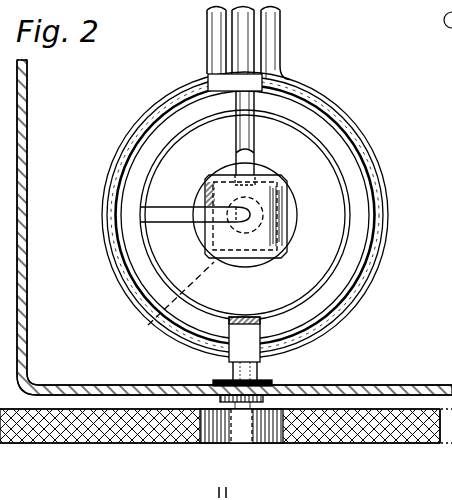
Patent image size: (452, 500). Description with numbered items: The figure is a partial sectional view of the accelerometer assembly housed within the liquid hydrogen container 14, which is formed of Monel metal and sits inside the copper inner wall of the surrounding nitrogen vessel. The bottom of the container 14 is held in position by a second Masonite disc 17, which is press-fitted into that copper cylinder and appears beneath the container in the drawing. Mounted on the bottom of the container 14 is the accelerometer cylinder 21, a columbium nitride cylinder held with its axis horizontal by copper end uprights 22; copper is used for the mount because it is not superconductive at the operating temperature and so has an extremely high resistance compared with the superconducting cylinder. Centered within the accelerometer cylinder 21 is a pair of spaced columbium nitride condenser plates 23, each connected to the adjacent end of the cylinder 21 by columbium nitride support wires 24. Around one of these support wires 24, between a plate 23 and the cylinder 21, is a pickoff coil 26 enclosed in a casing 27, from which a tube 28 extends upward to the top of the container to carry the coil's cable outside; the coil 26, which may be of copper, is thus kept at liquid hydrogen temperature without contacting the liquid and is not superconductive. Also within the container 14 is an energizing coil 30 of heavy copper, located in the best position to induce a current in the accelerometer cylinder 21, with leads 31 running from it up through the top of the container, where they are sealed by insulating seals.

The container 14 is at (27, 317).
The second Masonite disc 17 is at (114, 444).
The accelerometer cylinder 21 is at (316, 137).
The copper end uprights 22 is at (262, 372).
The condenser plates 23 is at (297, 218).
The support wires 24 is at (172, 212).
The pickoff coil 26 is at (147, 326).
The casing 27 is at (288, 177).
The tube 28 is at (254, 138).
The energizing coil 30 is at (339, 313).
The leads 31 is at (207, 39).